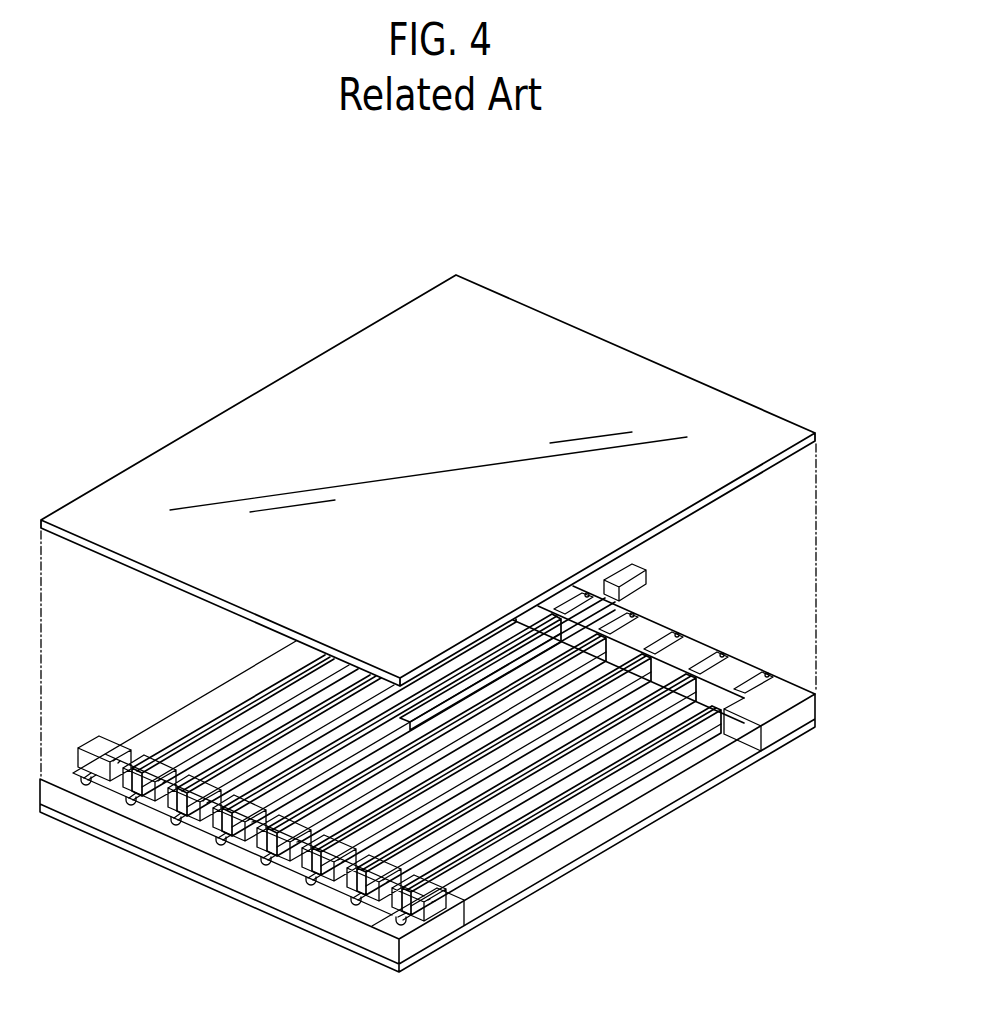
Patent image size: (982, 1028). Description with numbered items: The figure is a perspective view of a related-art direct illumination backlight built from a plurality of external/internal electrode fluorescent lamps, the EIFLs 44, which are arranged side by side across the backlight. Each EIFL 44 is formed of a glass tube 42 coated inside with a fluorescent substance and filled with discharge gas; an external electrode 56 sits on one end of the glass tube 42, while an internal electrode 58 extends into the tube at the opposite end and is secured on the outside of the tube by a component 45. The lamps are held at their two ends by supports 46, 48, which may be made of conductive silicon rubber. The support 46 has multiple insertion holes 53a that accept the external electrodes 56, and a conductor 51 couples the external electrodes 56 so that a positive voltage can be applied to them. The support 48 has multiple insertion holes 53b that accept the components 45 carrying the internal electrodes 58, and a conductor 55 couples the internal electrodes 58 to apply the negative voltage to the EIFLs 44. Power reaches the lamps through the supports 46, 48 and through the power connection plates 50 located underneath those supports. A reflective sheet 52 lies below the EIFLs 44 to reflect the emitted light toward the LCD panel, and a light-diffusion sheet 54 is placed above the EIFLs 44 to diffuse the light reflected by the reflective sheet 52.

The glass tube 42 is at (280, 742).
The EIFL 44 is at (330, 735).
The component 45 is at (622, 580).
The support 46 is at (418, 950).
The support 48 is at (792, 748).
The power connection plate 50 is at (375, 960).
The conductor 51 is at (160, 822).
The reflective sheet 52 is at (598, 837).
The insertion hole 53a is at (195, 830).
The insertion hole 53b is at (642, 622).
The light-diffusion sheet 54 is at (596, 347).
The conductor 55 is at (692, 667).
The external electrode 56 is at (268, 800).
The internal electrode 58 is at (646, 570).